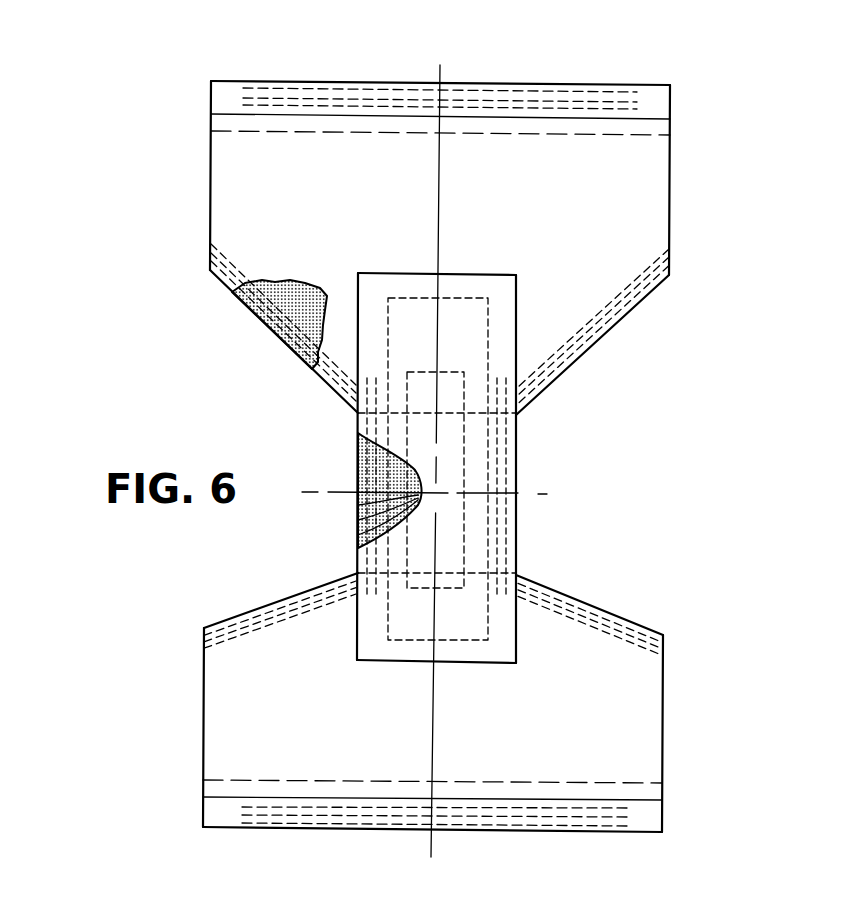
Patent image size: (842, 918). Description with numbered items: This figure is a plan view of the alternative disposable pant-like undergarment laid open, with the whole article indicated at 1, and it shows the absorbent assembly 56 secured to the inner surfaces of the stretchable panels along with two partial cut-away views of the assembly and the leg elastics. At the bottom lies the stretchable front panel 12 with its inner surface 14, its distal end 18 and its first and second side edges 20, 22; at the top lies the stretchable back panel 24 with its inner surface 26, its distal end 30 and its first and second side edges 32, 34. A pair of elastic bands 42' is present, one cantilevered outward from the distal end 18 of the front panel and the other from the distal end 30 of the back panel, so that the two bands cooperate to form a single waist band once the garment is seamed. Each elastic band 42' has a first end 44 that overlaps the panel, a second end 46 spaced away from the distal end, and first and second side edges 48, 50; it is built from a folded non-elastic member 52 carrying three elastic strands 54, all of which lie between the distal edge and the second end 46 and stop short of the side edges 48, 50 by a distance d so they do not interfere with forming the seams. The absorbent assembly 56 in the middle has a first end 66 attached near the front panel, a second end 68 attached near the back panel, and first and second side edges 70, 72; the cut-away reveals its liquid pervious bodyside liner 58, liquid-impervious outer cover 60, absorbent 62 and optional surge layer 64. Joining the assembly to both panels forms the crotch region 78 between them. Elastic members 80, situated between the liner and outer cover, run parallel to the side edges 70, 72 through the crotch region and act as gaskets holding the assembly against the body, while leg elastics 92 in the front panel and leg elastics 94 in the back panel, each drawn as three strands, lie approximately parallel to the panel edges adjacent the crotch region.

The absorbent article 1 is at (782, 95).
The stretchable front panel 12 is at (633, 697).
The inner surface 14 is at (383, 652).
The distal end 18 is at (640, 801).
The first side edge 20 is at (203, 722).
The second side edge 22 is at (663, 724).
The stretchable back panel 24 is at (626, 183).
The inner surface 26 is at (349, 298).
The distal end 30 is at (671, 118).
The first side edge 32 is at (210, 194).
The second side edge 34 is at (669, 222).
The elastic band 42' is at (585, 457).
The first end 44 is at (546, 137).
The second end 46 is at (498, 82).
The first side edge 48 is at (211, 89).
The second side edge 50 is at (671, 89).
The non-elastic member 52 is at (536, 83).
The elastic strands 54 is at (308, 96).
The absorbent assembly 56 is at (523, 548).
The liquid pervious bodyside liner 58 is at (500, 630).
The liquid-impervious outer cover 60 is at (380, 540).
The absorbent 62 is at (385, 522).
The surge layer 64 is at (400, 500).
The first end 66 is at (463, 664).
The second end 68 is at (496, 273).
The first side edge 70 is at (357, 413).
The second side edge 72 is at (722, 415).
The crotch region 78 is at (530, 573).
The elastic member 80 is at (375, 470).
The leg elastics 92 is at (280, 617).
The leg elastics 94 is at (290, 333).